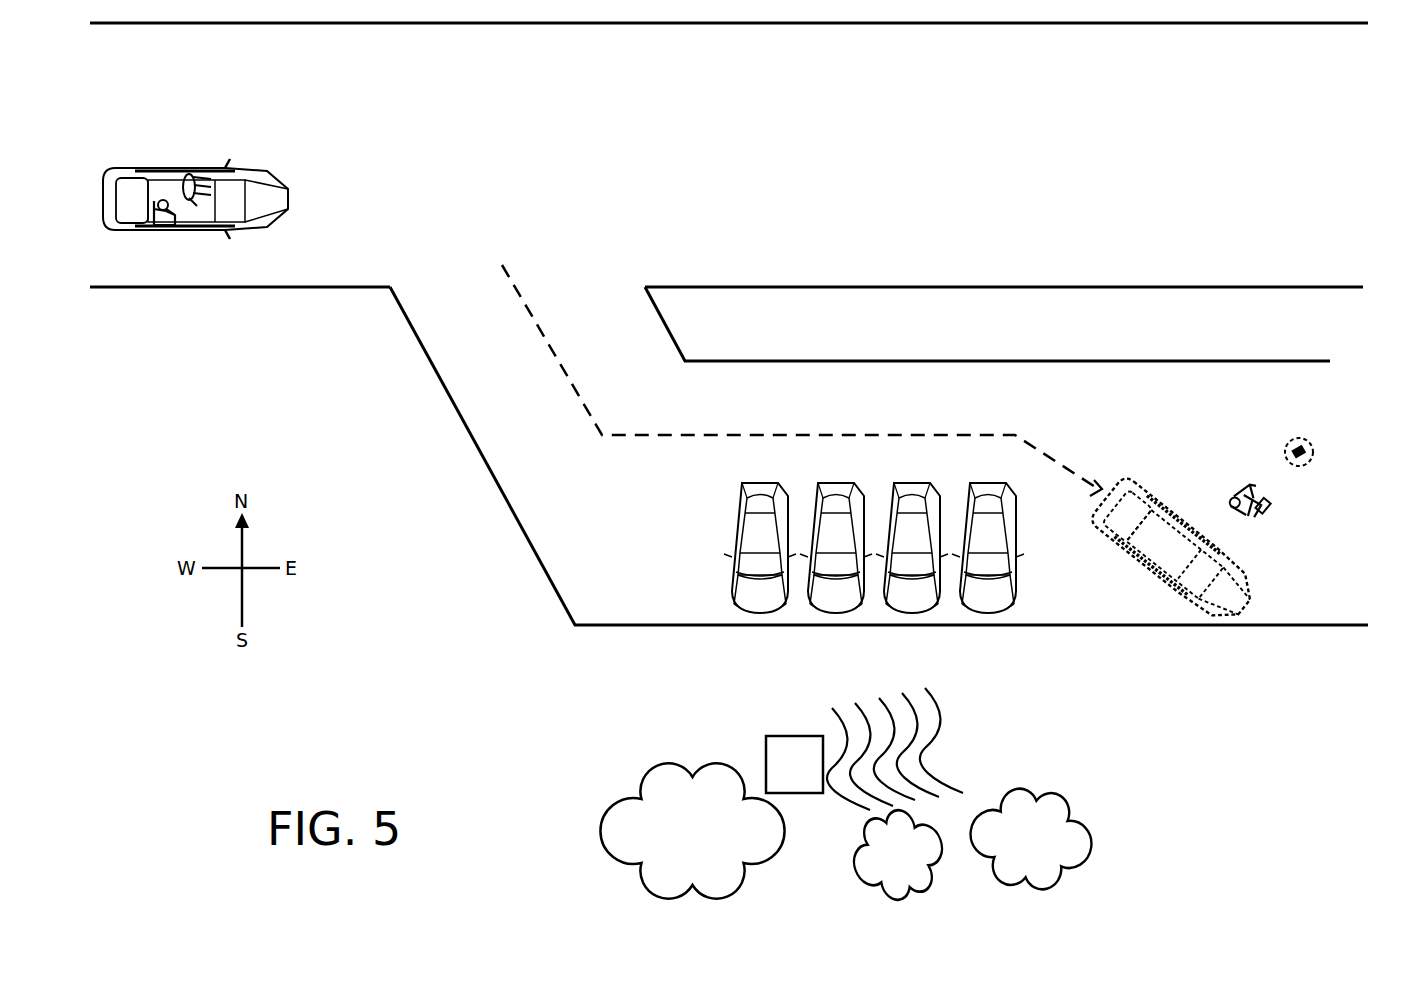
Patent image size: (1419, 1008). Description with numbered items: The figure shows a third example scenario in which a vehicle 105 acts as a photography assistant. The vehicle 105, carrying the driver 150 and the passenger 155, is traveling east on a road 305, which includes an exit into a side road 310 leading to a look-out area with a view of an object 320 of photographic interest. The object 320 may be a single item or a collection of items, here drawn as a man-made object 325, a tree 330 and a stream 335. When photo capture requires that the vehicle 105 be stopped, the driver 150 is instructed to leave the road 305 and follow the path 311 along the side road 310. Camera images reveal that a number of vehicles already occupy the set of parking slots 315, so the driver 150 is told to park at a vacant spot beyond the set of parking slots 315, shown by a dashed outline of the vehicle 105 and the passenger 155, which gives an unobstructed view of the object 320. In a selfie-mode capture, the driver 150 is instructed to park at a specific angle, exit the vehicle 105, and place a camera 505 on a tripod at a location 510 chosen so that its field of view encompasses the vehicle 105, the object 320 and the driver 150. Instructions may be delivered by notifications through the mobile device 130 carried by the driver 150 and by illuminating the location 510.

The vehicle 105 is at (144, 131).
The mobile device 130 is at (1263, 517).
The driver 150 is at (205, 165).
The passenger 155 is at (181, 240).
The road 305 is at (240, 185).
The side road 310 is at (879, 456).
The path 311 is at (572, 377).
The set of parking slots 315 is at (670, 508).
The object 320 is at (594, 707).
The man-made object 325 is at (794, 764).
The tree 330 is at (692, 830).
The stream 335 is at (963, 753).
The camera 505 is at (1306, 456).
The location 510 is at (1314, 451).